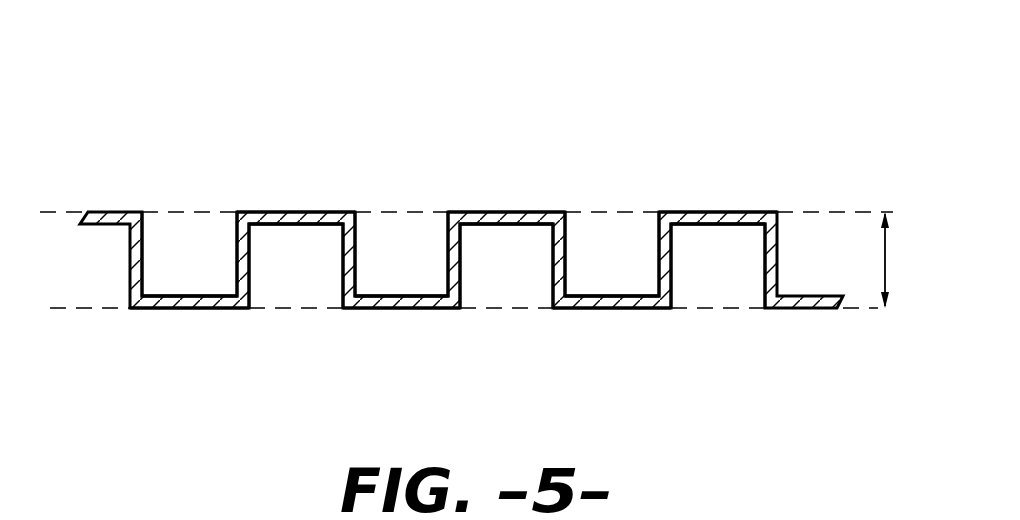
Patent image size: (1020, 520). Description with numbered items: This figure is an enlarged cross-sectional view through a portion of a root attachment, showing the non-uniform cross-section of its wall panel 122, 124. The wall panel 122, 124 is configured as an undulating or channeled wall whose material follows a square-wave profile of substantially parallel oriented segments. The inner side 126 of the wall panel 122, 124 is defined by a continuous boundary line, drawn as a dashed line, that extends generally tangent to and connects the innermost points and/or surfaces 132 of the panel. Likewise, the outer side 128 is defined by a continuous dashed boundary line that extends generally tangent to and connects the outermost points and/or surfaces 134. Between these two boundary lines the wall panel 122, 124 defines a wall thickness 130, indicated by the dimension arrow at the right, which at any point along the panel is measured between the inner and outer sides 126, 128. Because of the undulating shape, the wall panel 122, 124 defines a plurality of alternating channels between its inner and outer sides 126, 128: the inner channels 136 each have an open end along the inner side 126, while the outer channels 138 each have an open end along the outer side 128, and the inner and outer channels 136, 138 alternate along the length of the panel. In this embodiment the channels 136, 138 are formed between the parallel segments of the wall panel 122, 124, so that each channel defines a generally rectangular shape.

The wall panel 122 is at (178, 130).
The wall panel 124 is at (457, 171).
The inner side 126 is at (490, 307).
The outer side 128 is at (415, 210).
The wall thickness 130 is at (887, 262).
The innermost points and/or surfaces 132 is at (183, 310).
The outermost points and/or surfaces 134 is at (280, 210).
The inner channels 136 is at (292, 290).
The outer channels 138 is at (180, 233).